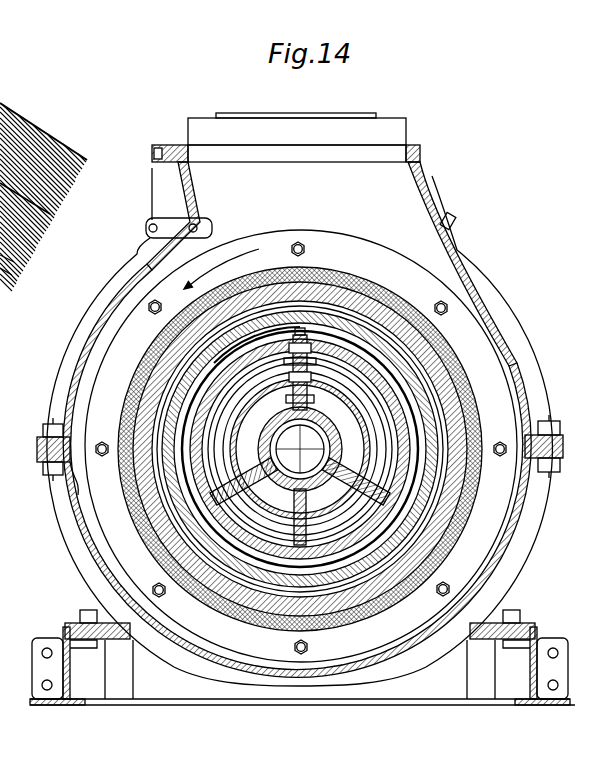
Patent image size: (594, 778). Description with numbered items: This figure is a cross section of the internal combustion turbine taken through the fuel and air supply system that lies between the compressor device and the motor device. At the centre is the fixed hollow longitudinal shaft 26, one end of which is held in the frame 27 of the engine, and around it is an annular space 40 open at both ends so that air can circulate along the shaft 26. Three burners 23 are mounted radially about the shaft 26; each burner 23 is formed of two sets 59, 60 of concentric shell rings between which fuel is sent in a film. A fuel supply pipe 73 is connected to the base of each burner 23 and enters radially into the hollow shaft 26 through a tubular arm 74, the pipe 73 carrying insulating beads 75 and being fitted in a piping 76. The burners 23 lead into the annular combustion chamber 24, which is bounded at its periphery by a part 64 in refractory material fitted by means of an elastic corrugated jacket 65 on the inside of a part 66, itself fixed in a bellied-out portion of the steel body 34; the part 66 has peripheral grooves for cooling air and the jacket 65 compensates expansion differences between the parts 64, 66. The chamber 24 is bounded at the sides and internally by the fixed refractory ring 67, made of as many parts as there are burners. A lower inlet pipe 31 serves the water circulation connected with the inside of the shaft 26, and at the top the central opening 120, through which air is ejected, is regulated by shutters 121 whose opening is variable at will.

The shutters 121 is at (398, 131).
The opening 120 is at (398, 156).
The combustion chamber 24 is at (258, 330).
The steel body 34 is at (324, 266).
The part 66 is at (358, 284).
The elastic corrugated jacket 65 is at (382, 292).
The part in refractory material 64 is at (440, 360).
The fixed ring 67 is at (200, 362).
The burner 23 is at (288, 350).
The set of concentric shell rings 60 is at (308, 342).
The set of concentric shell rings 59 is at (268, 396).
The lower inlet pipe 31 is at (318, 406).
The fuel supply pipe 73 is at (292, 414).
The tubular arm 74 is at (248, 432).
The piping 76 is at (290, 445).
The fixed longitudinal shaft 26 is at (306, 441).
The annular space 40 is at (362, 444).
The insulating beads 75 is at (292, 488).
The frame 27 is at (547, 636).